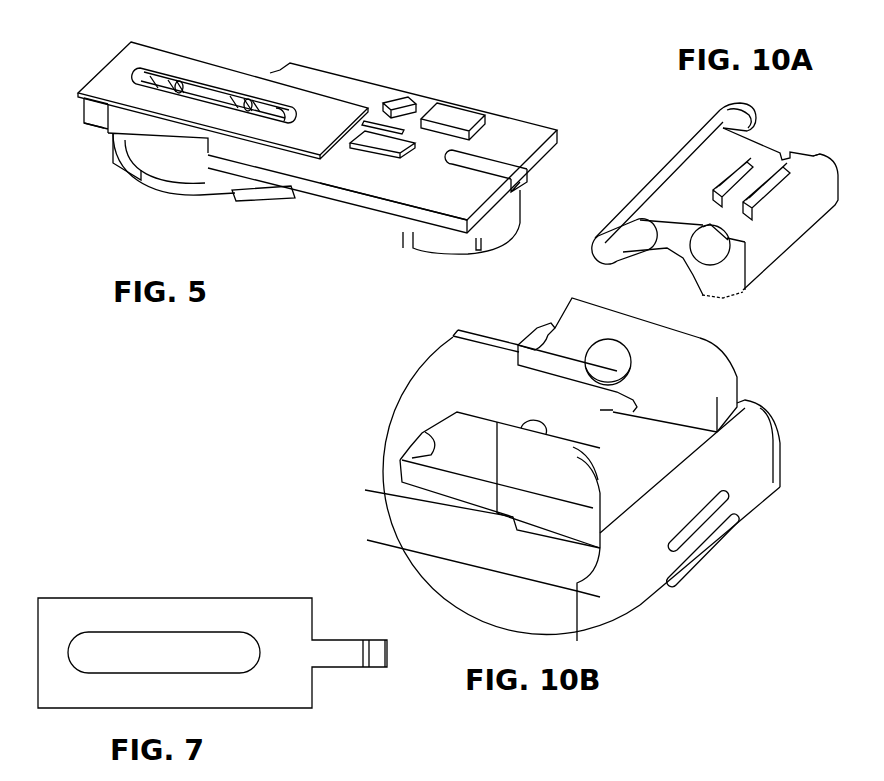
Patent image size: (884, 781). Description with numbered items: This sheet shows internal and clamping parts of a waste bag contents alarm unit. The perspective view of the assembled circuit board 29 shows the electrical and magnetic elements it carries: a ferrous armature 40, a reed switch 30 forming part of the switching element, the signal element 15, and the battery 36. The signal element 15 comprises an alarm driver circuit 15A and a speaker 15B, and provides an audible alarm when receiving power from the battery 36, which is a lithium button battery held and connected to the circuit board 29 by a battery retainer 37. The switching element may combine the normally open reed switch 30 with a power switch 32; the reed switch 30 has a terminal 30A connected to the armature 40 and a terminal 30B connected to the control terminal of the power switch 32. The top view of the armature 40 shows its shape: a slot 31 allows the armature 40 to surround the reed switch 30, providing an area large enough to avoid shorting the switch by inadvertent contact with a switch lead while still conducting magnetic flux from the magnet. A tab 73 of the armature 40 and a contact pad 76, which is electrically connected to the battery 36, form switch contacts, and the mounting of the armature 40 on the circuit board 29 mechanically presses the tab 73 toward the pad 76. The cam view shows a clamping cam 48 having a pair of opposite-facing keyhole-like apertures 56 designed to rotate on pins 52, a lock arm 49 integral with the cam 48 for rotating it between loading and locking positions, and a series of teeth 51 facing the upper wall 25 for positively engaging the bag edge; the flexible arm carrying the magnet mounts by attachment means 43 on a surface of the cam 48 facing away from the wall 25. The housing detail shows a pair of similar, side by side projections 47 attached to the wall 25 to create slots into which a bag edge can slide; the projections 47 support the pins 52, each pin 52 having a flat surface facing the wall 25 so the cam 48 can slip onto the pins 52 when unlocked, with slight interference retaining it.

In FIG. 5, the signal element 15 is at (510, 136).
In FIG. 5, the alarm driver circuit 15A is at (452, 117).
In FIG. 5, the speaker 15B is at (443, 240).
In FIG. 10B, the upper wall 25 is at (455, 392).
In FIG. 5, the circuit board 29 is at (357, 200).
In FIG. 5, the reed switch 30 is at (205, 97).
In FIG. 5, the reed switch terminal 30A is at (283, 115).
In FIG. 5, the reed switch terminal 30B is at (91, 112).
In FIG. 5, the slot 31 is at (140, 70).
In FIG. 7, the slot 31 is at (100, 634).
In FIG. 5, the power switch 32 is at (400, 103).
In FIG. 5, the battery 36 is at (183, 178).
In FIG. 5, the battery retainer 37 is at (273, 197).
In FIG. 5, the armature 40 is at (118, 67).
In FIG. 7, the armature 40 is at (53, 624).
In FIG. 10A, the attachment means 43 is at (732, 172).
In FIG. 10B, the projection 47 is at (673, 378).
In FIG. 10A, the clamping cam 48 is at (654, 162).
In FIG. 10A, the lock arm 49 is at (600, 247).
In FIG. 10A, the teeth 51 is at (723, 302).
In FIG. 10B, the pin 52 is at (602, 367).
In FIG. 10A, the aperture 56 is at (795, 157).
In FIG. 5, the tab 73 is at (377, 137).
In FIG. 7, the tab 73 is at (340, 653).
In FIG. 5, the contact pad 76 is at (385, 154).